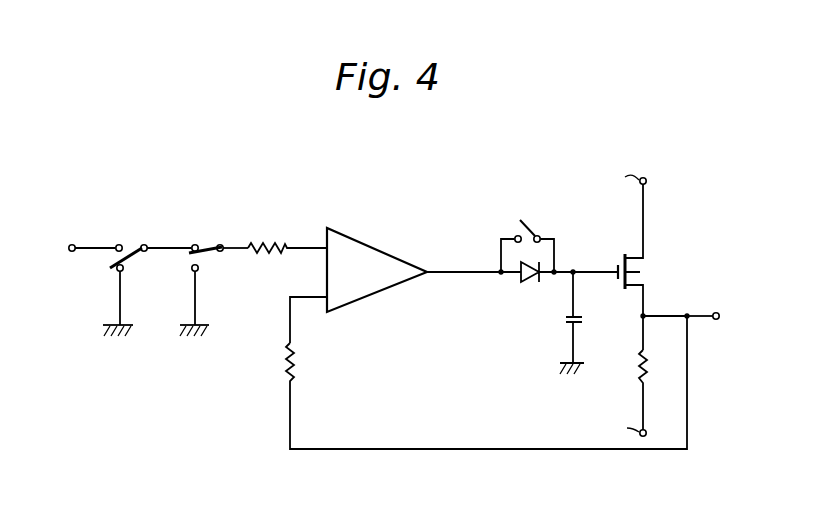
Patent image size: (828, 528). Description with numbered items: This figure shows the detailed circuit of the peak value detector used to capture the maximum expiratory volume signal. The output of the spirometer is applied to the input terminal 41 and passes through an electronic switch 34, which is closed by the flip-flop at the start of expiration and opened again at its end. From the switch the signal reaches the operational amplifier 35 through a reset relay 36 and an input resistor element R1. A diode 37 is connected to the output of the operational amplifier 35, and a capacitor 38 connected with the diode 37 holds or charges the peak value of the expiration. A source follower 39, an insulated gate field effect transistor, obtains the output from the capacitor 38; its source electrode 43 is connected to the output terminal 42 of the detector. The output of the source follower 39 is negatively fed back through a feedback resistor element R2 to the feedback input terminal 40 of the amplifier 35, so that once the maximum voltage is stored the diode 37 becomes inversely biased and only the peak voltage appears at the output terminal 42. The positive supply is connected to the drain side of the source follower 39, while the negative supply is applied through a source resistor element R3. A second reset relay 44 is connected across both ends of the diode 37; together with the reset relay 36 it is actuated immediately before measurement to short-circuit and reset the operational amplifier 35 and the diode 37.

The input terminal 41 is at (75, 243).
The electronic switch 34 is at (130, 243).
The reset relay 36 is at (205, 242).
The input resistor element R1 is at (262, 242).
The operational amplifier 35 is at (377, 243).
The feedback input terminal 40 is at (308, 298).
The feedback resistor element R2 is at (287, 373).
The reset relay 44 is at (520, 234).
The diode 37 is at (528, 283).
The capacitor 38 is at (567, 325).
The source follower 39 is at (648, 267).
The source electrode 43 is at (645, 322).
The source resistor element R3 is at (640, 378).
The output terminal 42 is at (717, 323).